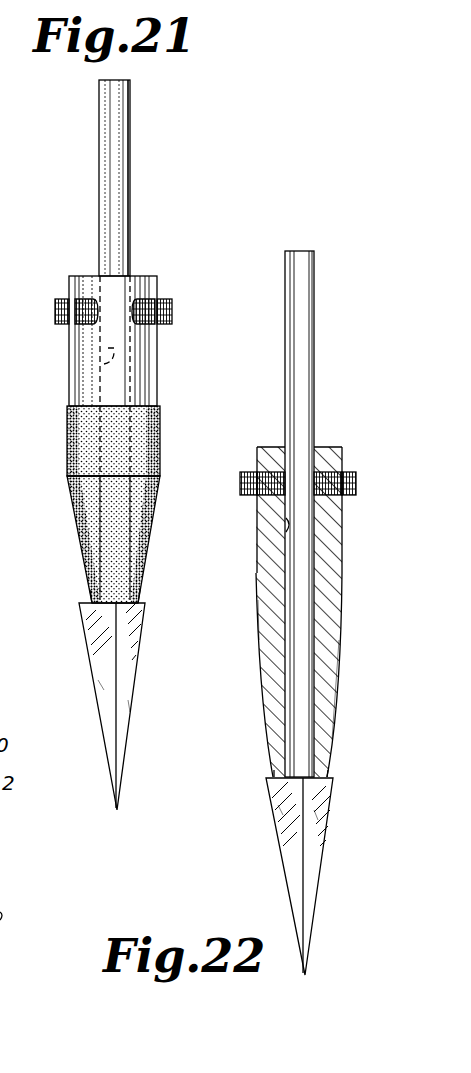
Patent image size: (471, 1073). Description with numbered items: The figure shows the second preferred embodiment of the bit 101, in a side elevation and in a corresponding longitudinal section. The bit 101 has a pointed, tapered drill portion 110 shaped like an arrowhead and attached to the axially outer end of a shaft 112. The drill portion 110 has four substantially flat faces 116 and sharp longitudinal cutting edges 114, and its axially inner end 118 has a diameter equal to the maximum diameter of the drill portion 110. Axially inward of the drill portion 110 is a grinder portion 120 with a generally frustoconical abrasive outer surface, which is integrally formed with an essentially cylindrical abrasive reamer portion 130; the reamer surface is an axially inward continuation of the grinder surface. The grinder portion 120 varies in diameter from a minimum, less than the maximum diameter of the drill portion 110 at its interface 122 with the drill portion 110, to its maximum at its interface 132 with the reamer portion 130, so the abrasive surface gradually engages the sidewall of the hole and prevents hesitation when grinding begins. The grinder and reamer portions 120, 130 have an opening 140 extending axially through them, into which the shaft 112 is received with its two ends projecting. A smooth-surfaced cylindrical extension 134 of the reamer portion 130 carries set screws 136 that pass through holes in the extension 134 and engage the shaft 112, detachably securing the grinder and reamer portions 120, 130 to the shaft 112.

In FIG. 21, the bit 101 is at (152, 236).
In FIG. 22, the bit 101 is at (344, 384).
In FIG. 21, the drill portion 110 is at (103, 740).
In FIG. 22, the drill portion 110 is at (282, 862).
In FIG. 21, the shaft 112 is at (117, 122).
In FIG. 22, the shaft 112 is at (300, 292).
In FIG. 21, the longitudinal cutting edges 114 is at (117, 650).
In FIG. 22, the longitudinal cutting edges 114 is at (305, 884).
In FIG. 21, the flat faces 116 is at (104, 686).
In FIG. 22, the flat faces 116 is at (281, 810).
In FIG. 21, the axially inner end 118 is at (92, 602).
In FIG. 22, the axially inner end 118 is at (276, 776).
In FIG. 21, the grinder portion 120 is at (150, 515).
In FIG. 22, the grinder portion 120 is at (340, 670).
In FIG. 21, the interface 122 is at (138, 602).
In FIG. 22, the interface 122 is at (326, 776).
In FIG. 21, the reamer portion 130 is at (148, 432).
In FIG. 22, the reamer portion 130 is at (345, 624).
In FIG. 21, the interface 132 is at (112, 476).
In FIG. 22, the interface 132 is at (257, 640).
In FIG. 21, the cylindrical extension 134 is at (144, 360).
In FIG. 22, the cylindrical extension 134 is at (330, 527).
In FIG. 21, the set screws 136 is at (170, 296).
In FIG. 22, the set screws 136 is at (362, 478).
In FIG. 21, the opening 140 is at (104, 364).
In FIG. 22, the opening 140 is at (290, 520).